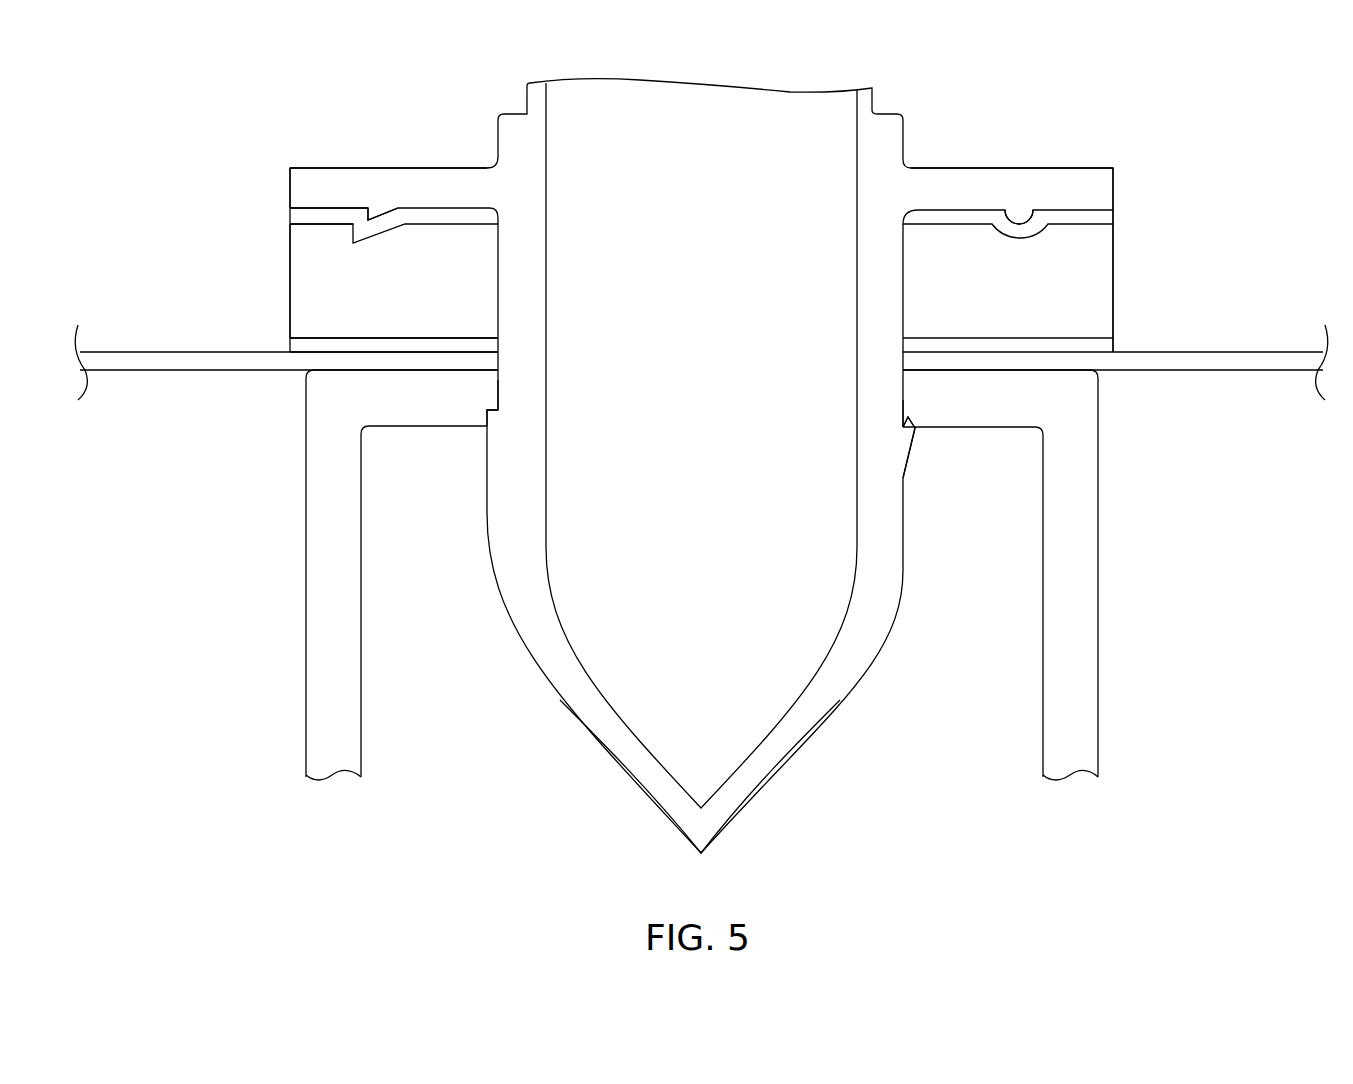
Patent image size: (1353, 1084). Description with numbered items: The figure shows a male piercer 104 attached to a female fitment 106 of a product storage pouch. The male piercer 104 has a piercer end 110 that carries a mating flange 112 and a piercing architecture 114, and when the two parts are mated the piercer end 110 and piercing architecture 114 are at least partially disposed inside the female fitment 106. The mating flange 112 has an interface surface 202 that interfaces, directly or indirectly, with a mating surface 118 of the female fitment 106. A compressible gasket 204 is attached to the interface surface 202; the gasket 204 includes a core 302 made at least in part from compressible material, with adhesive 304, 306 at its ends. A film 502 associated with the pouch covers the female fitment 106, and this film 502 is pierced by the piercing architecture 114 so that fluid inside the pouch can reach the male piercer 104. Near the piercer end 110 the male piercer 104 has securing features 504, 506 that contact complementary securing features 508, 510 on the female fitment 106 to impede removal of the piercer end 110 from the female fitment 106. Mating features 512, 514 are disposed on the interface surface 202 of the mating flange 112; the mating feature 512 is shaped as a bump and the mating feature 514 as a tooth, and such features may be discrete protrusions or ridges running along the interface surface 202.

The male piercer 104 is at (875, 93).
The female fitment 106 is at (330, 638).
The piercer end 110 is at (547, 342).
The mating flange 112 is at (437, 192).
The piercing architecture 114 is at (757, 787).
The mating surface 118 is at (408, 372).
The interface surface 202 is at (317, 207).
The compressible gasket 204 is at (1140, 210).
The core 302 is at (317, 283).
The adhesive 304 is at (298, 347).
The adhesive 306 is at (297, 216).
The film 502 is at (167, 360).
The securing feature 504 is at (910, 433).
The securing feature 506 is at (497, 419).
The complementary securing feature 508 is at (915, 428).
The complementary securing feature 510 is at (493, 387).
The mating feature 512 is at (1017, 212).
The mating feature 514 is at (372, 215).